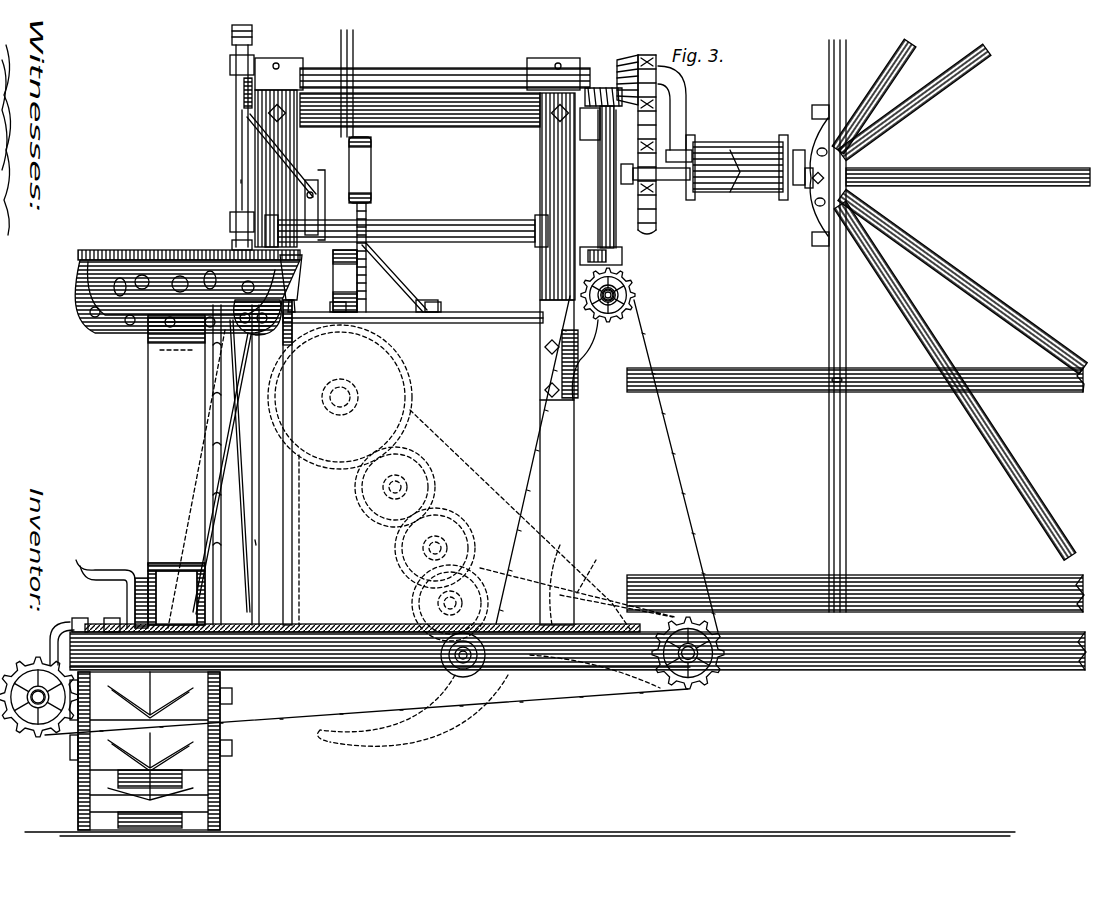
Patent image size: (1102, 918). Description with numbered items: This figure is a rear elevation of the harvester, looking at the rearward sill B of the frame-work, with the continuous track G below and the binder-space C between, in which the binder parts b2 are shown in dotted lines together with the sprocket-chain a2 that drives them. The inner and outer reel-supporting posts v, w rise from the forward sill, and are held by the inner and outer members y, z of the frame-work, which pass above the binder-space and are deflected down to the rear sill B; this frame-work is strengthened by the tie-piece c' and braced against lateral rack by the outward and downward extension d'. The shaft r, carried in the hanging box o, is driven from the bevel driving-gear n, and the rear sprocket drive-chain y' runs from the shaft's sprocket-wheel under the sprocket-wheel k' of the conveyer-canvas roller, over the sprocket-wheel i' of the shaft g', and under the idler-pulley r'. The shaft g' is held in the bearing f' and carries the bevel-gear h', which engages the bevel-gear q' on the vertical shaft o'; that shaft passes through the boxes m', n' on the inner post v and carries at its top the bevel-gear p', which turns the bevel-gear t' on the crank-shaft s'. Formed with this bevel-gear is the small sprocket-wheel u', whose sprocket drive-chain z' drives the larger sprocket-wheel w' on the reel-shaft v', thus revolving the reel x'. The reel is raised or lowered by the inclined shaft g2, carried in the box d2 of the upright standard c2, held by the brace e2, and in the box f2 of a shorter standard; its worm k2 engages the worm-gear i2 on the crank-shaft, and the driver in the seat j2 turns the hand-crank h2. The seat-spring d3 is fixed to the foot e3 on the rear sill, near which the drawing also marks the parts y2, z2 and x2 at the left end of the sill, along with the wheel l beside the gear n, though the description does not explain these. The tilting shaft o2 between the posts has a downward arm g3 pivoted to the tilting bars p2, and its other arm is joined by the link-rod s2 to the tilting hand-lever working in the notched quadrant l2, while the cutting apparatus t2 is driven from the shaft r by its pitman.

The rearward sill B is at (383, 668).
The reel x' is at (855, 368).
The hanging box o is at (950, 299).
The reel-shaft v' is at (744, 155).
The crank-shaft s' is at (502, 103).
The sprocket drive-chain z' is at (655, 186).
The bevel-gear p' is at (601, 89).
The bevel-gear t' is at (627, 65).
The small sprocket-wheel u' is at (650, 129).
The larger sprocket-wheel w' is at (663, 224).
The box n' is at (598, 177).
The vertical shaft o' is at (598, 179).
The box m' is at (625, 250).
The sprocket-wheel i' is at (609, 307).
The bevel-gear q' is at (637, 280).
The bevel-gear h' is at (637, 292).
The shaft g' is at (646, 304).
The bearing f' is at (586, 360).
The sprocket drive-chain y' is at (381, 517).
The inner member of the frame-work y is at (535, 460).
The sprocket-wheel k' is at (695, 657).
The idler-pulley r' is at (468, 663).
The sprocket-chain a2 is at (542, 521).
The binder-space C is at (322, 462).
The tie-piece c' is at (413, 323).
The binder parts b2 is at (378, 483).
The inner reel-supporting post v is at (559, 250).
The tilting shaft o2 is at (458, 224).
The inclined shaft g2 is at (240, 132).
The worm k2 is at (232, 38).
The box d2 is at (230, 64).
The worm-gear i2 is at (244, 96).
The upright standard c2 is at (236, 162).
The outer reel-supporting post w is at (263, 398).
The box f2 is at (230, 220).
The cutting apparatus t2 is at (310, 190).
The link-rod s2 is at (371, 162).
The notched quadrant l2 is at (368, 218).
The brace e2 is at (388, 282).
The seat j2 is at (150, 250).
The hand-crank h2 is at (300, 290).
The downward arm g3 is at (212, 338).
The seat-spring d3 is at (212, 500).
The outward and downward extension d' is at (195, 465).
The tilting bars p2 is at (246, 522).
The outer member of the frame-work z is at (265, 540).
The foot e3 is at (176, 594).
The hook lever y2 is at (86, 565).
The block z2 is at (138, 578).
The pipe bracket x2 is at (64, 622).
The sprocket wheel l is at (39, 688).
The shaft r is at (28, 725).
The bevel driving-gear n is at (61, 725).
The continuous track G is at (88, 800).